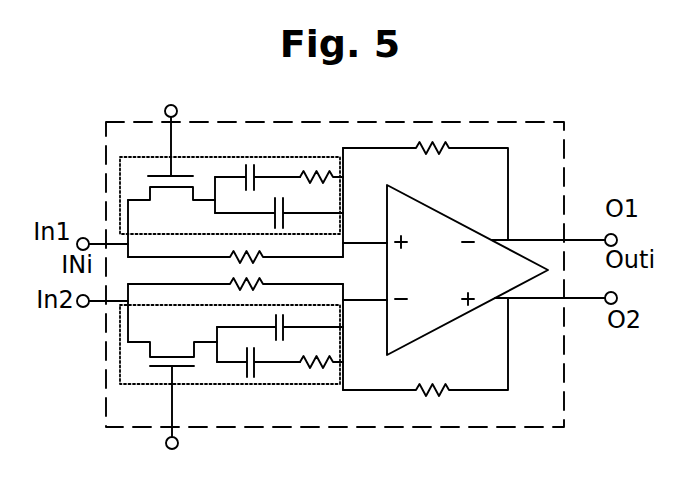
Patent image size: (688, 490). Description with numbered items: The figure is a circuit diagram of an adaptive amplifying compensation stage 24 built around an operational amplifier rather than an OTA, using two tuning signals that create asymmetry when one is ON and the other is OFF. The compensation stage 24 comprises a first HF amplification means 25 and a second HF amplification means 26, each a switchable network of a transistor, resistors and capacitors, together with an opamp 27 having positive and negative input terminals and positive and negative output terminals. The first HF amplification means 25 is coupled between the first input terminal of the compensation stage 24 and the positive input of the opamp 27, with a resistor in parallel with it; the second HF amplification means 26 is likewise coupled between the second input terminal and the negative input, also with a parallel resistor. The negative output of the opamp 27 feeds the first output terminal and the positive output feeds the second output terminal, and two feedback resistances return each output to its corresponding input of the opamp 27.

The adaptive amplifying compensation stage 24 is at (564, 402).
The first HF amplification means 25 is at (120, 165).
The second HF amplification means 26 is at (120, 330).
The opamp 27 is at (486, 300).